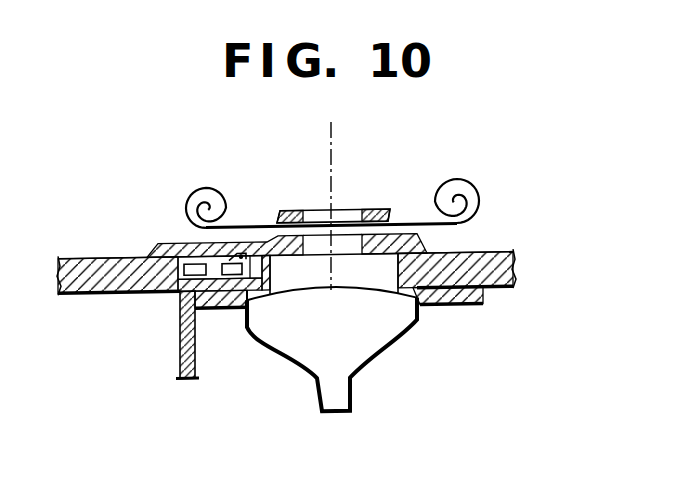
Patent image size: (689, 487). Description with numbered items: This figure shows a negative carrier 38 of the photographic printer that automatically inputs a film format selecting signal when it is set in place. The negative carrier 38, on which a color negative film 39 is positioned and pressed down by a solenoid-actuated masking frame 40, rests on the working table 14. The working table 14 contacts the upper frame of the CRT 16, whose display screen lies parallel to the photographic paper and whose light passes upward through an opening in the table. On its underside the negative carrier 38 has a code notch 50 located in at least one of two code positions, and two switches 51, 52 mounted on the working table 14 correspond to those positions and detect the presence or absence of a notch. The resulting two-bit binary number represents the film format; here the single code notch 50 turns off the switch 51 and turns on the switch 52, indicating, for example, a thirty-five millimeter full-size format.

The working table 14 is at (497, 268).
The CRT 16 is at (383, 336).
The negative carrier 38 is at (169, 241).
The color negative film 39 is at (416, 223).
The masking frame 40 is at (378, 209).
The code notch 50 is at (240, 254).
The switch 51 is at (232, 274).
The switch 52 is at (187, 275).